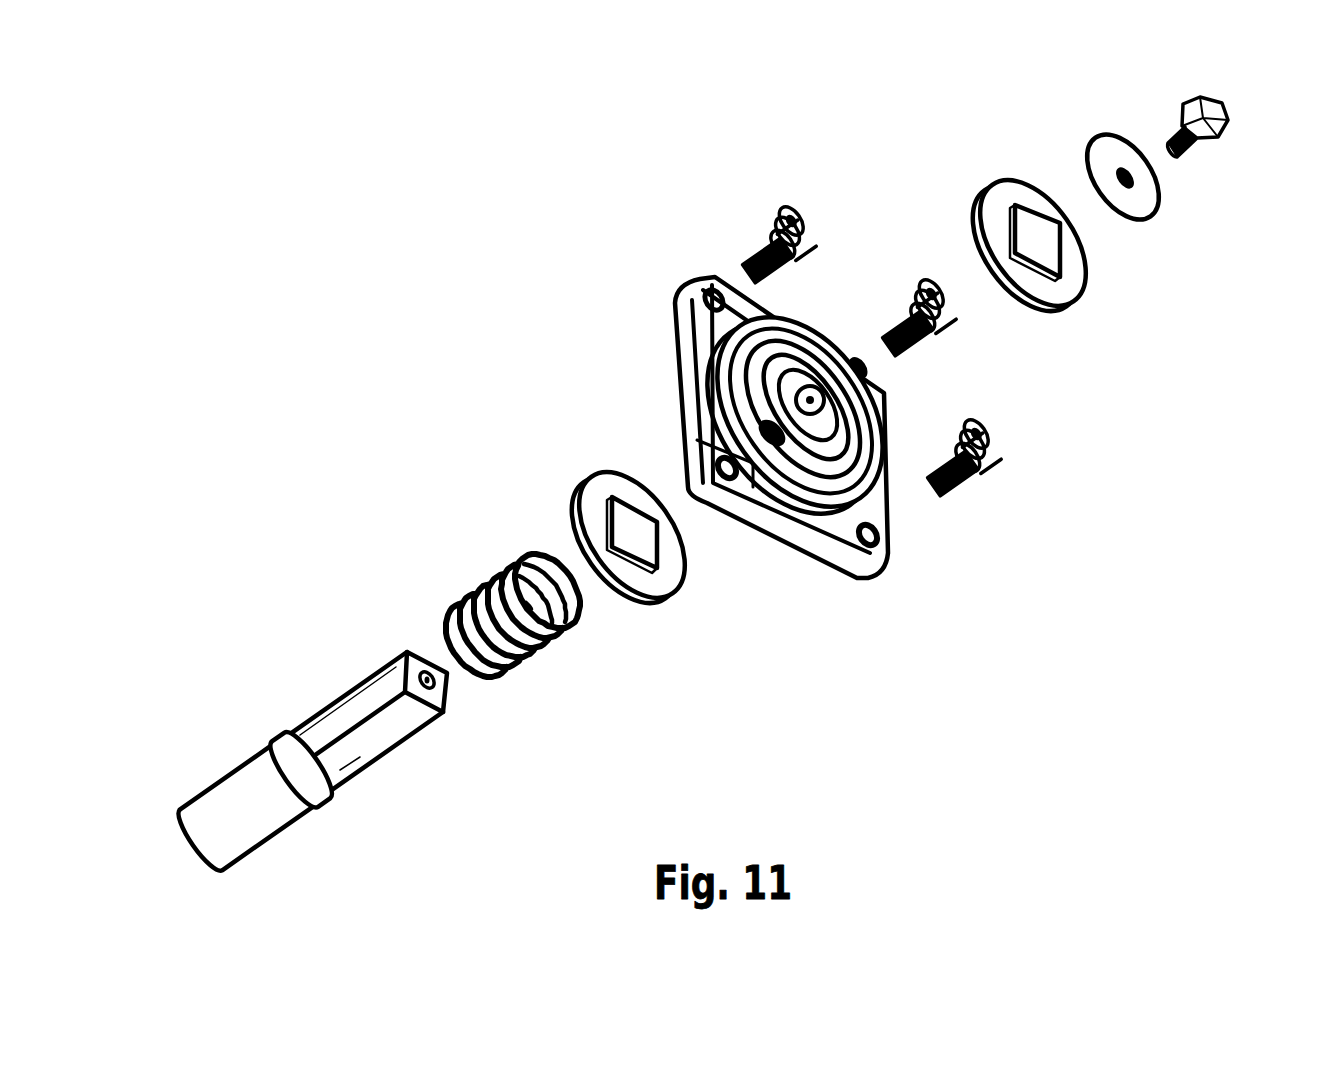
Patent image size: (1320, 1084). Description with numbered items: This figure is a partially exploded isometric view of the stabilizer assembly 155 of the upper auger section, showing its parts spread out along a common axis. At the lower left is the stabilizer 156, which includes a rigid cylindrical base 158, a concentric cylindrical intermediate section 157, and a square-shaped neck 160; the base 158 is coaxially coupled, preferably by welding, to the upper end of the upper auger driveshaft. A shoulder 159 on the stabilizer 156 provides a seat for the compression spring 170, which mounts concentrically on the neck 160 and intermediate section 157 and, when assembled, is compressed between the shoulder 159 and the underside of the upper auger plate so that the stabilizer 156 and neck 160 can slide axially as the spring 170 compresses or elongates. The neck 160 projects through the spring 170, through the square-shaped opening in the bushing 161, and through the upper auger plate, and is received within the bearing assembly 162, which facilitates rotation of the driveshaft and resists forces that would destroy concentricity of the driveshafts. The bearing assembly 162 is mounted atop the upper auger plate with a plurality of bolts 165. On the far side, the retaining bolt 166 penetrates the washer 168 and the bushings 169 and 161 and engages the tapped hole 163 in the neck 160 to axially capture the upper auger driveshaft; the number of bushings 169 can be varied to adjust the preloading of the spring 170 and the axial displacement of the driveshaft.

The stabilizer assembly 155 is at (530, 392).
The stabilizer 156 is at (209, 610).
The intermediate section 157 is at (289, 726).
The cylindrical base 158 is at (267, 843).
The shoulder 159 is at (352, 755).
The neck 160 is at (410, 730).
The bushing 161 is at (643, 600).
The bearing assembly 162 is at (914, 590).
The tapped hole 163 is at (427, 672).
The bolts 165 is at (777, 230).
The retaining bolt 166 is at (1213, 147).
The washer 168 is at (1093, 168).
The bushings 169 is at (1057, 310).
The compression spring 170 is at (540, 650).